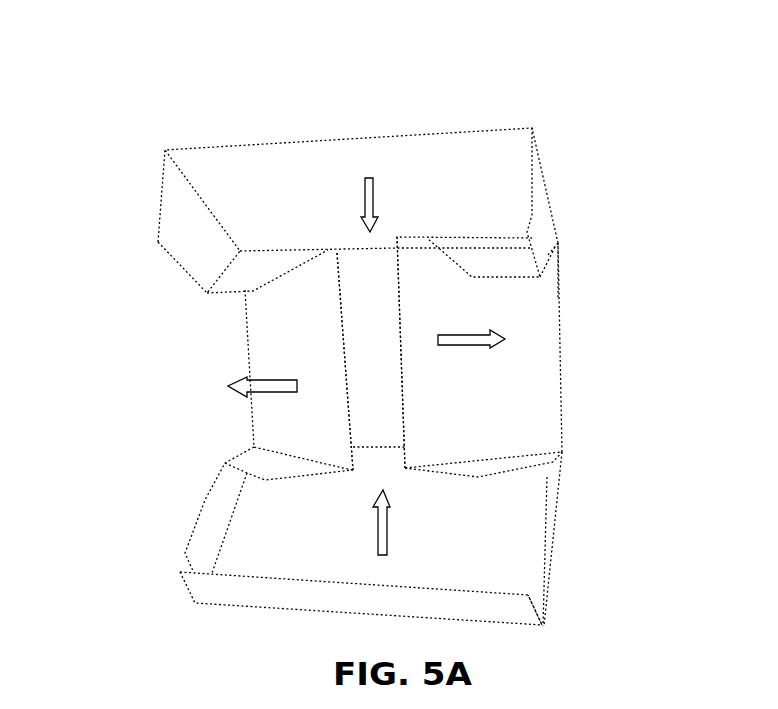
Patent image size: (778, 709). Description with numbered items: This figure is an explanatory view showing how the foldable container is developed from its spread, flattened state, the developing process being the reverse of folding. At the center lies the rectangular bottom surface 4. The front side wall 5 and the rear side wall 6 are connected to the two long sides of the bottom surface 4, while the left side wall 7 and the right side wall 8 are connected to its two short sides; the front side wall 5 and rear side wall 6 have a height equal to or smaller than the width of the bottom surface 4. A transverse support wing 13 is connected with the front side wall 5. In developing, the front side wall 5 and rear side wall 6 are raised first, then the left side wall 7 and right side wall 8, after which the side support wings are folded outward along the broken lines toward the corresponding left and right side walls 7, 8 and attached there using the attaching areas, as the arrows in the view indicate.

The bottom surface 4 is at (318, 267).
The front side wall 5 is at (434, 536).
The rear side wall 6 is at (358, 180).
The left side wall 7 is at (220, 361).
The right side wall 8 is at (536, 357).
The transverse support wing 13 is at (281, 598).